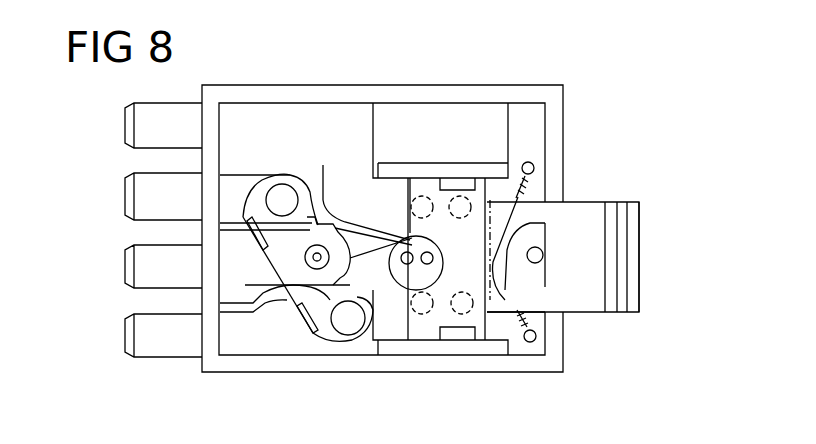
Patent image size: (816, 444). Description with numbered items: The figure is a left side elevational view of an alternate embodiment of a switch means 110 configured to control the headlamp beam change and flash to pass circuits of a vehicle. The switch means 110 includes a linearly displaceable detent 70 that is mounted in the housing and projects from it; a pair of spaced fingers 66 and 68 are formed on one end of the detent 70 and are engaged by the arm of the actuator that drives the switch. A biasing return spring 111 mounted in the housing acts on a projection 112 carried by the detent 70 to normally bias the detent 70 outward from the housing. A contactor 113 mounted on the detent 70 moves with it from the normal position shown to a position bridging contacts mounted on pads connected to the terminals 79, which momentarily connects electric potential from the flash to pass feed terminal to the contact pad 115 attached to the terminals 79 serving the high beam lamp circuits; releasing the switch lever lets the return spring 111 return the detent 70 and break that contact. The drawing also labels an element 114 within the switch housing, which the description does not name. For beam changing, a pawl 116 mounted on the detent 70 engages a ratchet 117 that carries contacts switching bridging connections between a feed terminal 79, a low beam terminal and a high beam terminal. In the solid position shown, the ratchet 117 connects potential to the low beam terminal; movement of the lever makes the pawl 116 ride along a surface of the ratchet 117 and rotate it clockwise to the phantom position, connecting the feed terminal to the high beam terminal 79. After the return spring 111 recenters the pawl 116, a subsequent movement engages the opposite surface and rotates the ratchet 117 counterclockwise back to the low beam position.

The switch means 110 is at (286, 76).
The terminals 79 is at (140, 130).
The contact pad 115 is at (352, 120).
The contact block 114 is at (428, 190).
The pawl 116 is at (400, 312).
The ratchet 117 is at (323, 337).
The biasing return spring 111 is at (523, 162).
The projection 112 is at (535, 222).
The detent 70 is at (582, 227).
The finger 68 is at (608, 222).
The finger 66 is at (640, 258).
The contactor 113 is at (487, 328).